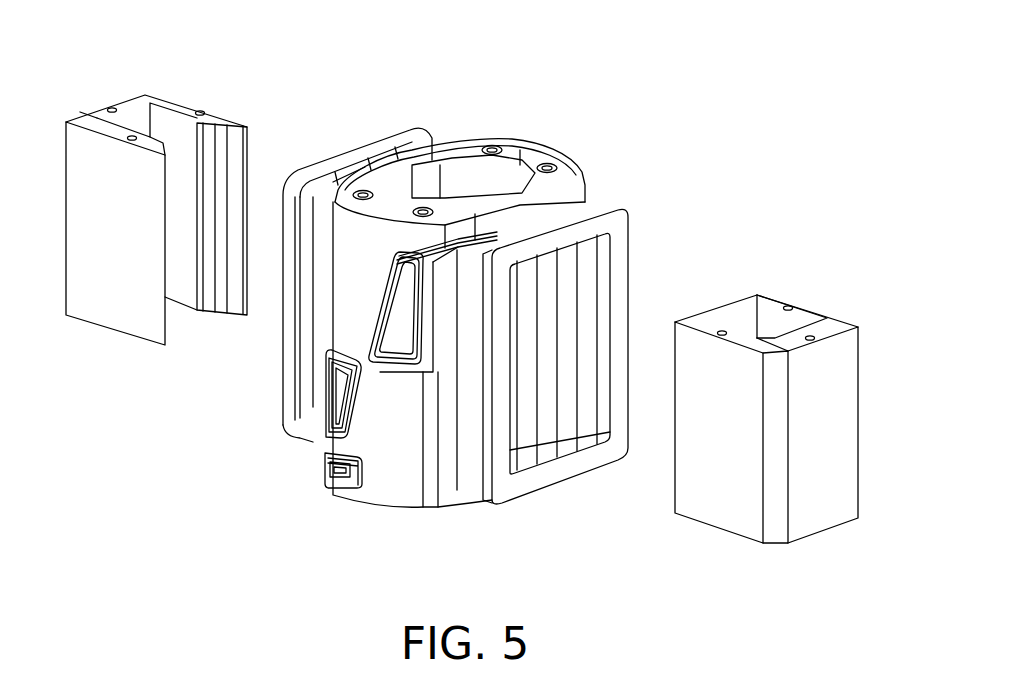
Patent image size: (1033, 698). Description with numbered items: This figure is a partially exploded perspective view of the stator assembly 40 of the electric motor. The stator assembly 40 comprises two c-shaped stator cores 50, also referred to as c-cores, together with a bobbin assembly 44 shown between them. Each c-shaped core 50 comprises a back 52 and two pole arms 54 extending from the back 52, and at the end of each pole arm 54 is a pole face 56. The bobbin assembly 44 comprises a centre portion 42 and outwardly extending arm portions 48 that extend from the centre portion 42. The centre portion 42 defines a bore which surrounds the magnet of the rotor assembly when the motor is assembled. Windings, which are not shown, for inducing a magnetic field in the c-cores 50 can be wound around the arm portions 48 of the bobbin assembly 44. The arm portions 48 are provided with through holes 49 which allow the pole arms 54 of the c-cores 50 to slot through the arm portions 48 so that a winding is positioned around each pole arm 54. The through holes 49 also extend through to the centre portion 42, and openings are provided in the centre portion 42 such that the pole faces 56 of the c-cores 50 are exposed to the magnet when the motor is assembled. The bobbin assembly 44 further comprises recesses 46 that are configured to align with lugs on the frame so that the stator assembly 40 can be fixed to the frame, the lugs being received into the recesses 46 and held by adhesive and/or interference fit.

The stator assembly 40 is at (487, 322).
The centre portion 42 is at (370, 392).
The bobbin assembly 44 is at (455, 339).
The recesses 46 is at (533, 150).
The arm portions 48 is at (388, 176).
The through holes 49 is at (585, 295).
The c-shaped stator core 50 is at (112, 74).
The back 52 is at (833, 442).
The pole arms 54 is at (107, 270).
The pole face 56 is at (236, 145).